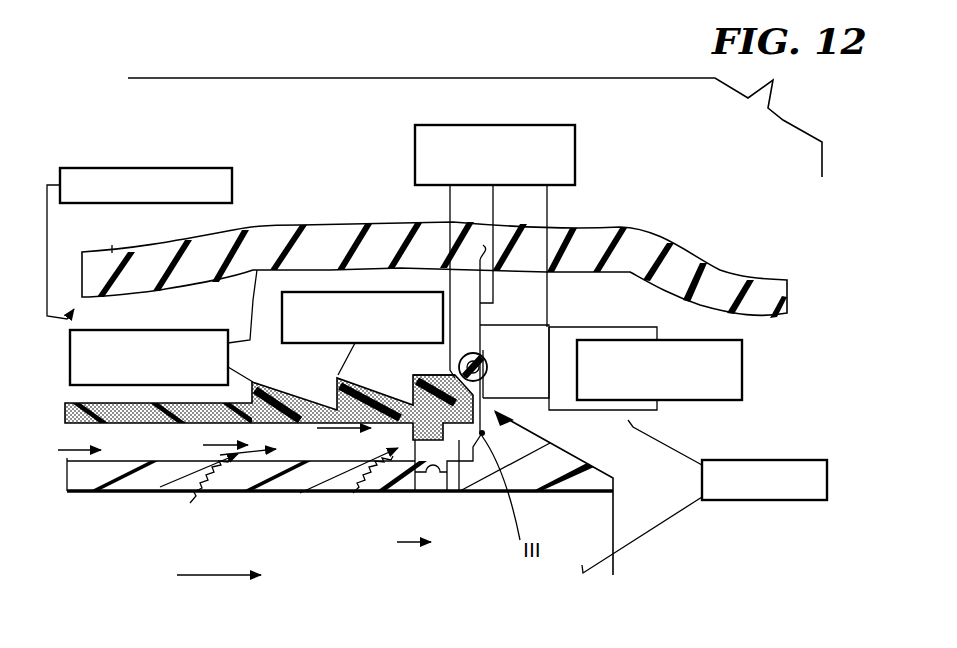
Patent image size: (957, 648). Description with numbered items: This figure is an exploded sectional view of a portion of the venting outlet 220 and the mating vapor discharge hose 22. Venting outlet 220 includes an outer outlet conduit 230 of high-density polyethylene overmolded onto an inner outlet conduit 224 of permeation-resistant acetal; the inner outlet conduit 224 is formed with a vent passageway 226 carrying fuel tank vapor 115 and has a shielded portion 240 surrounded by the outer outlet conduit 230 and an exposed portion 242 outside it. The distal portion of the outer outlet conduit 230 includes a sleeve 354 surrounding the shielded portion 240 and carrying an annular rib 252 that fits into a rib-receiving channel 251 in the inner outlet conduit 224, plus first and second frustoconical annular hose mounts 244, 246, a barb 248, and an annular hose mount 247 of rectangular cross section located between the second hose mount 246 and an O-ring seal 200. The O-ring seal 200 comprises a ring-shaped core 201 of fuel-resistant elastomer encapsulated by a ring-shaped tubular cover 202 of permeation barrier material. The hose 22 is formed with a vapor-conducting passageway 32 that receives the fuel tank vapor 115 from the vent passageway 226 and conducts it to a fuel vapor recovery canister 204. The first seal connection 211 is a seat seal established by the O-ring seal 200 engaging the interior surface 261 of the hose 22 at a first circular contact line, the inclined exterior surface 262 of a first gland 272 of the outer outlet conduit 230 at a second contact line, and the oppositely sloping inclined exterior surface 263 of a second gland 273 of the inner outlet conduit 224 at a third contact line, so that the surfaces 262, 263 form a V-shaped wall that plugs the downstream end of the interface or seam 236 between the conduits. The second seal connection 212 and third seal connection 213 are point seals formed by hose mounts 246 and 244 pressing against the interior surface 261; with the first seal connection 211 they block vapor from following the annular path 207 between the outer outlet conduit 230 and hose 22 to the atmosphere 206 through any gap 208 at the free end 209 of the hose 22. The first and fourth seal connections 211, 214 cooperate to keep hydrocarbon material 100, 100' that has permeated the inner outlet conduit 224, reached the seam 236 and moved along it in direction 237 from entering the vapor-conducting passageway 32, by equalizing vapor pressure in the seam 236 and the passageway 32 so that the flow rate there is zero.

The vapor discharge hose 22 is at (608, 218).
The vapor-conducting passageway 32 is at (767, 346).
The hydrocarbon material 100 is at (187, 476).
The flow path 100' is at (298, 508).
The fuel tank vapor 115 is at (240, 577).
The O-ring seal 200 is at (515, 345).
The ring-shaped core 201 is at (512, 376).
The ring-shaped tubular cover 202 is at (488, 366).
The fuel vapor recovery canister 204 is at (825, 497).
The atmosphere 206 is at (170, 168).
The annular path 207 is at (268, 293).
The gap or opening 208 is at (77, 306).
The free end 209 is at (113, 245).
The first seal connection 211 is at (575, 160).
The second seal connection 212 is at (367, 291).
The third seal connection 213 is at (152, 330).
The fourth seal connection 214 is at (742, 372).
The venting outlet 220 is at (61, 472).
The inner outlet conduit 224 is at (162, 477).
The vent passageway 226 is at (112, 570).
The outer outlet conduit 230 is at (87, 436).
The interface or seam 236 is at (218, 492).
The direction 237 is at (339, 445).
The shielded portion 240 is at (170, 465).
The exposed portion 242 is at (518, 491).
The first frustoconical annular hose mount 244 is at (277, 372).
The second frustoconical annular hose mount 246 is at (338, 383).
The annular hose mount 247 is at (422, 377).
The barb 248 is at (517, 443).
The rib-receiving channel 251 is at (446, 476).
The annular rib 252 is at (343, 493).
The interior surface 261 is at (460, 272).
The inclined exterior surface 262 is at (413, 393).
The oppositely sloping inclined exterior surface 263 is at (485, 434).
The first gland 272 is at (459, 493).
The second gland 273 is at (482, 436).
The sleeve 354 is at (133, 408).